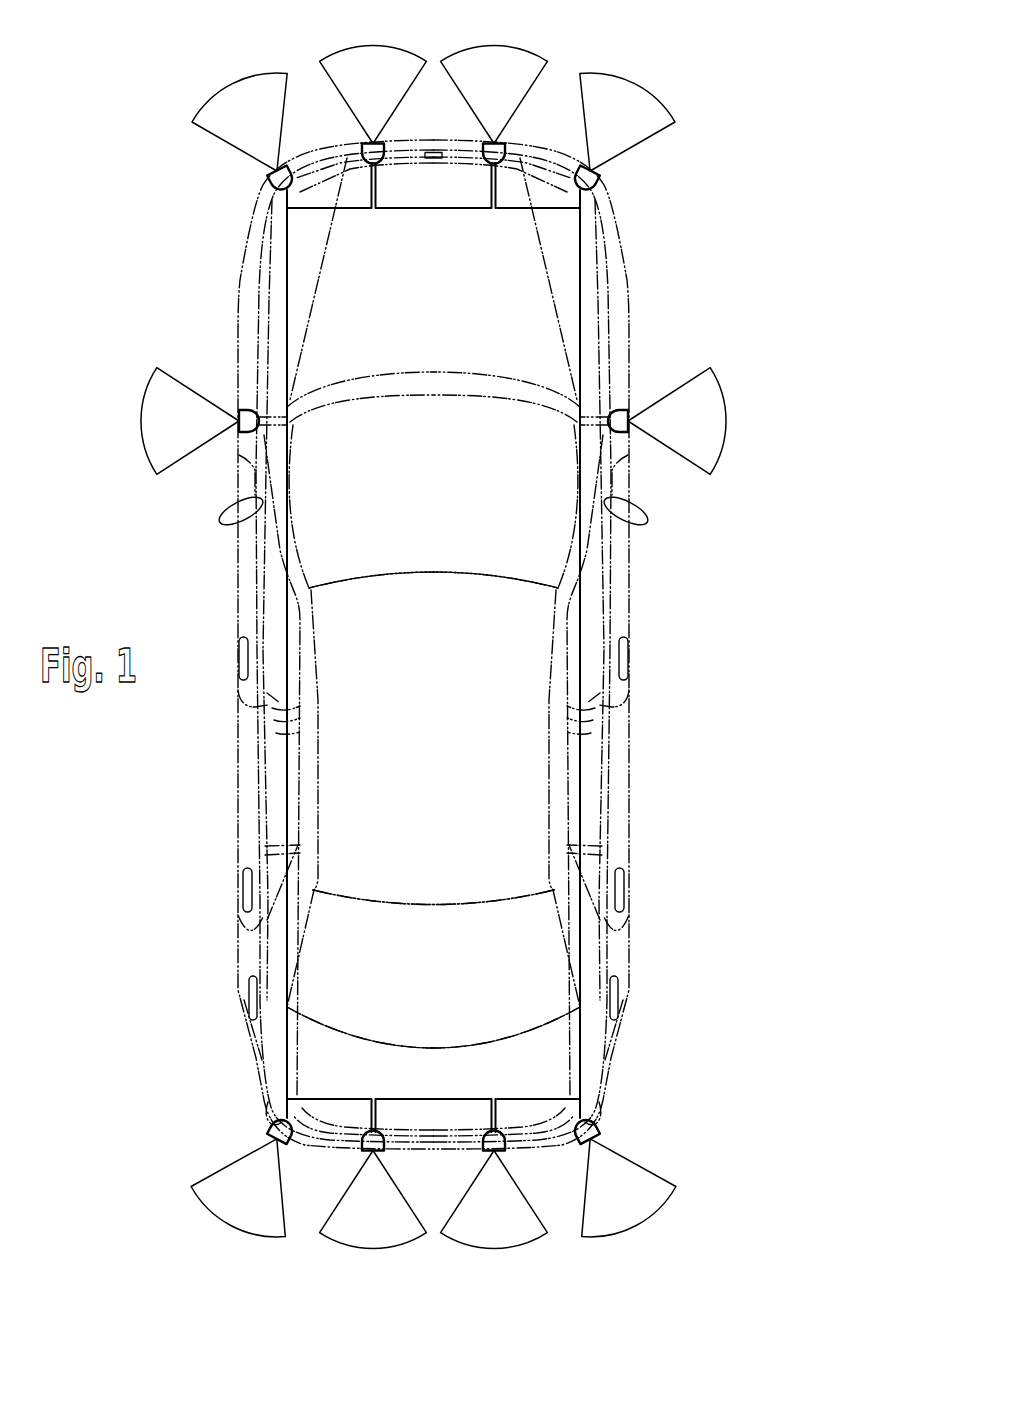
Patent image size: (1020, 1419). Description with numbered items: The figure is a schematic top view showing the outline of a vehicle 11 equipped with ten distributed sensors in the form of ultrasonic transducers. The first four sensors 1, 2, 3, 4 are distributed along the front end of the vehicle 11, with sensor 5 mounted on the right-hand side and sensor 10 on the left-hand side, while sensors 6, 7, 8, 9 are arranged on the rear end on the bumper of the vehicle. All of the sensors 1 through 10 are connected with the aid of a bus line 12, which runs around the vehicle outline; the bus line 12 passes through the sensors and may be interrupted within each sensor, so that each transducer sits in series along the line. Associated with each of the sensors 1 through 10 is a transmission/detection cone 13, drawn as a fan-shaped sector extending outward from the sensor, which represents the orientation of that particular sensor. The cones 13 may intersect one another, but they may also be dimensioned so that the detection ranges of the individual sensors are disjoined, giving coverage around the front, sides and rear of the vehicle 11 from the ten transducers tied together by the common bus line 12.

The sensor 1 is at (268, 180).
The sensor 2 is at (370, 147).
The sensor 3 is at (497, 147).
The sensor 4 is at (599, 180).
The sensor 5 is at (622, 433).
The sensor 6 is at (588, 1128).
The sensor 7 is at (497, 1143).
The sensor 8 is at (370, 1143).
The sensor 9 is at (280, 1128).
The sensor 10 is at (245, 433).
The vehicle 11 is at (628, 762).
The bus line 12 is at (582, 628).
The transmission/detection cone 13 is at (226, 143).